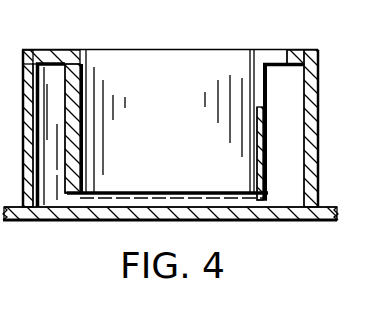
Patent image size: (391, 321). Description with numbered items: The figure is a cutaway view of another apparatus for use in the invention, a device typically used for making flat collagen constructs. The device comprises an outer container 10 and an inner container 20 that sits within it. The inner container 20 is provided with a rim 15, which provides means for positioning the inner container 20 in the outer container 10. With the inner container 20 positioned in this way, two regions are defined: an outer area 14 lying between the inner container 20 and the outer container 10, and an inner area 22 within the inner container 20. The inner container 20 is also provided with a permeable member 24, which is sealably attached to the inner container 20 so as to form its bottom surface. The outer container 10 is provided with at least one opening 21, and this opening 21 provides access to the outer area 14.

The outer container 10 is at (325, 158).
The outer area 14 is at (55, 168).
The rim 15 is at (308, 50).
The inner container 20 is at (277, 128).
The opening 21 is at (263, 51).
The inner area 22 is at (139, 62).
The permeable member 24 is at (156, 190).